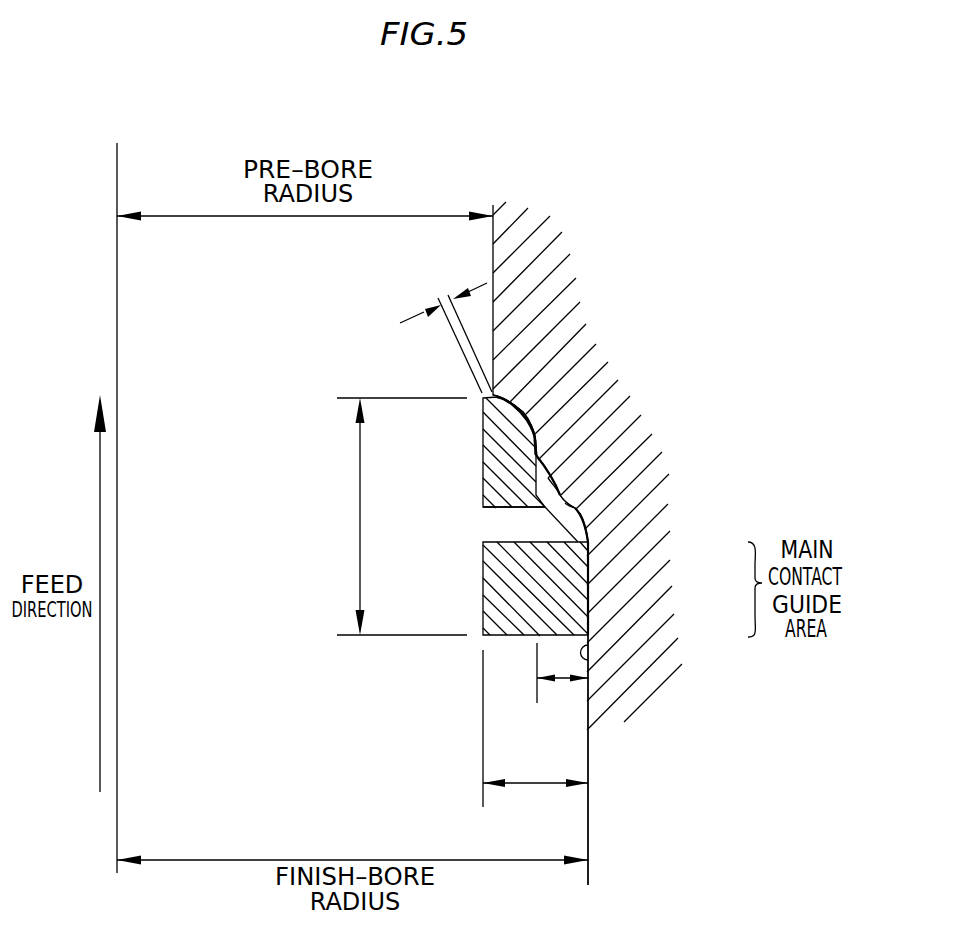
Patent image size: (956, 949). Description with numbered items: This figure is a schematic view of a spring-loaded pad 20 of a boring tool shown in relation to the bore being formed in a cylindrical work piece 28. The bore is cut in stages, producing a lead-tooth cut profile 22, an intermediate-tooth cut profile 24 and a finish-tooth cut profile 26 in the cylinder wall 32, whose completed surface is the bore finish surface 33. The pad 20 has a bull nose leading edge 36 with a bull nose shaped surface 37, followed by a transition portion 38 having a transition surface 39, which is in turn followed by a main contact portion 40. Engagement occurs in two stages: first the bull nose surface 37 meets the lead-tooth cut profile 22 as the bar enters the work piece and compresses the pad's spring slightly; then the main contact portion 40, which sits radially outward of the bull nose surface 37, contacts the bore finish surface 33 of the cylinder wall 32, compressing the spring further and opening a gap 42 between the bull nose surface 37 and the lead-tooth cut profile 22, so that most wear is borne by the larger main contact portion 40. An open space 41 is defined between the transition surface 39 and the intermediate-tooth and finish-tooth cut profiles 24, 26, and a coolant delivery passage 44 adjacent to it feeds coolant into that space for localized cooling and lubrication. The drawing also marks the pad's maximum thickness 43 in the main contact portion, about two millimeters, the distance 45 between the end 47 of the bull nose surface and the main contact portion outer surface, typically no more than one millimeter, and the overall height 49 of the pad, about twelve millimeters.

The pad 20 is at (495, 461).
The lead-tooth cut profile 22 is at (538, 425).
The intermediate-tooth cut profile 24 is at (560, 490).
The finish-tooth cut profile 26 is at (563, 517).
The cylindrical work piece 28 is at (632, 674).
The cylinder wall 32 is at (606, 729).
The bore finish surface 33 is at (586, 657).
The bull nose leading edge 36 is at (503, 420).
The bull nose shaped surface 37 is at (546, 440).
The transition portion 38 is at (576, 510).
The transition surface 39 is at (579, 532).
The main contact portion 40 is at (589, 597).
The open space 41 is at (548, 498).
The gap 42 is at (413, 315).
The maximum thickness 43 is at (531, 783).
The coolant delivery passage 44 is at (483, 520).
The distance 45 is at (566, 684).
The end of the bull nose surface 47 is at (546, 460).
The overall height 49 is at (360, 517).